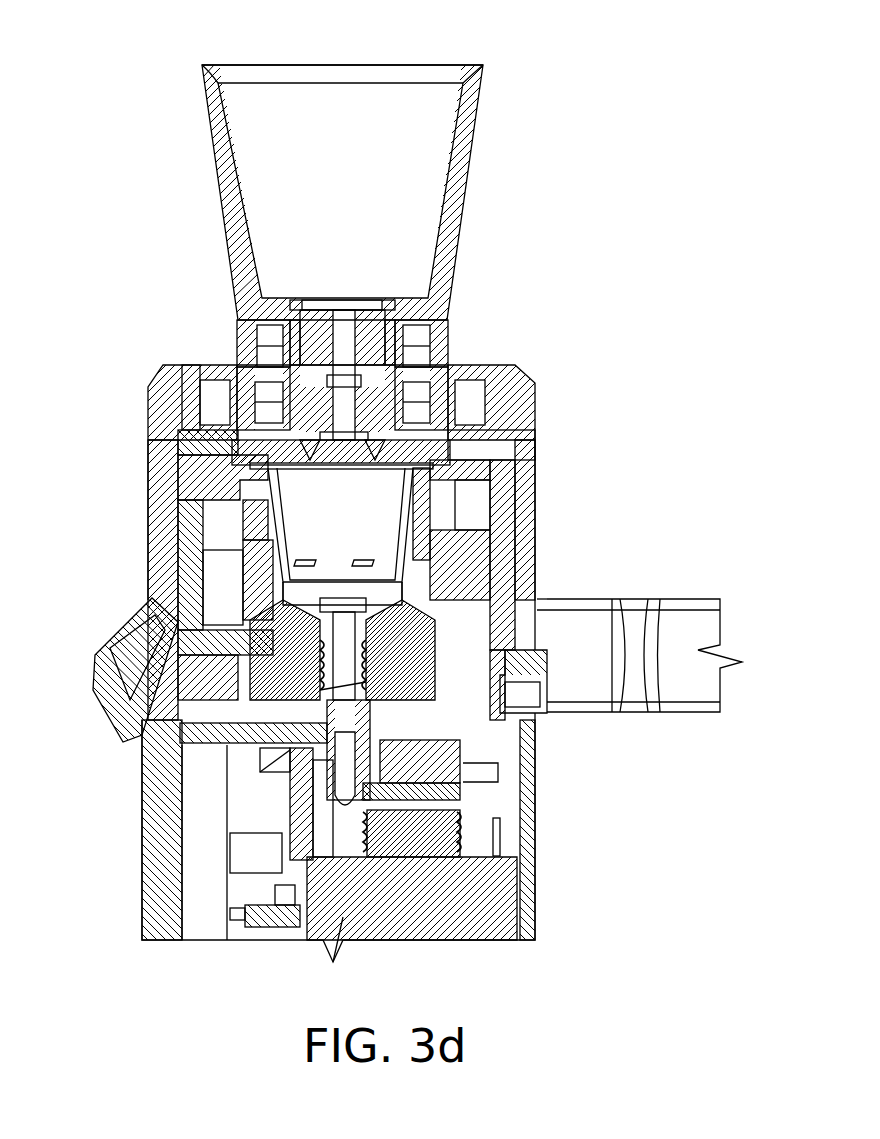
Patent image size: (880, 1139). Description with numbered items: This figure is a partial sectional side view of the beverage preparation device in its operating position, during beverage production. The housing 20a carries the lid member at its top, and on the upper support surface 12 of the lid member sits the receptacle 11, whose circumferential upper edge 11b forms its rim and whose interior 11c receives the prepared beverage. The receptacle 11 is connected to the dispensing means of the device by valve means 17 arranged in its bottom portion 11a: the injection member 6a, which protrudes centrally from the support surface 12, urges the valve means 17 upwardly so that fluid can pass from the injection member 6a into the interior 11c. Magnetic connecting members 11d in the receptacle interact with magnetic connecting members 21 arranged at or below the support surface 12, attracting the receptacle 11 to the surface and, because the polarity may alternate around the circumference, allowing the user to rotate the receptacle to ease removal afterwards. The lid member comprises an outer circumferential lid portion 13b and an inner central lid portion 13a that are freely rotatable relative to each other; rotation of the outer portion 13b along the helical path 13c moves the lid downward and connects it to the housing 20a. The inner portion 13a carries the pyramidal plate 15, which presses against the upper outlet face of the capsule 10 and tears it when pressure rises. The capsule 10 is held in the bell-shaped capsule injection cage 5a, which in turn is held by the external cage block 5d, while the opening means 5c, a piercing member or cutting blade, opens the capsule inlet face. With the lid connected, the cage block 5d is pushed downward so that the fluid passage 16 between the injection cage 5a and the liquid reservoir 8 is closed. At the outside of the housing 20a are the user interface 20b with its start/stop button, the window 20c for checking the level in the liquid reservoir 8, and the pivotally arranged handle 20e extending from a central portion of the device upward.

The receptacle 11 is at (470, 175).
The circumferential upper edge 11b is at (487, 75).
The interior of the receptacle 11c is at (361, 165).
The magnetic connecting members 11d is at (242, 335).
The bottom portion 11a is at (440, 352).
The injection member 6a is at (262, 300).
The valve means 17 is at (385, 318).
The upper support surface 12 is at (203, 365).
The magnetic connecting members 21 is at (245, 385).
The inner central lid portion 13a is at (198, 392).
The outer circumferential lid portion 13b is at (165, 432).
The helical path 13c is at (158, 530).
The pyramidal plate 15 is at (497, 422).
The capsule injection cage 5a is at (483, 470).
The external cage block 5d is at (152, 486).
The opening means 5c is at (430, 588).
The capsule 10 is at (357, 517).
The fluid passage 16 is at (368, 720).
The liquid reservoir 8 is at (211, 808).
The housing 20a is at (537, 838).
The user interface 20b is at (115, 632).
The window 20c is at (158, 865).
The handle 20e is at (655, 610).